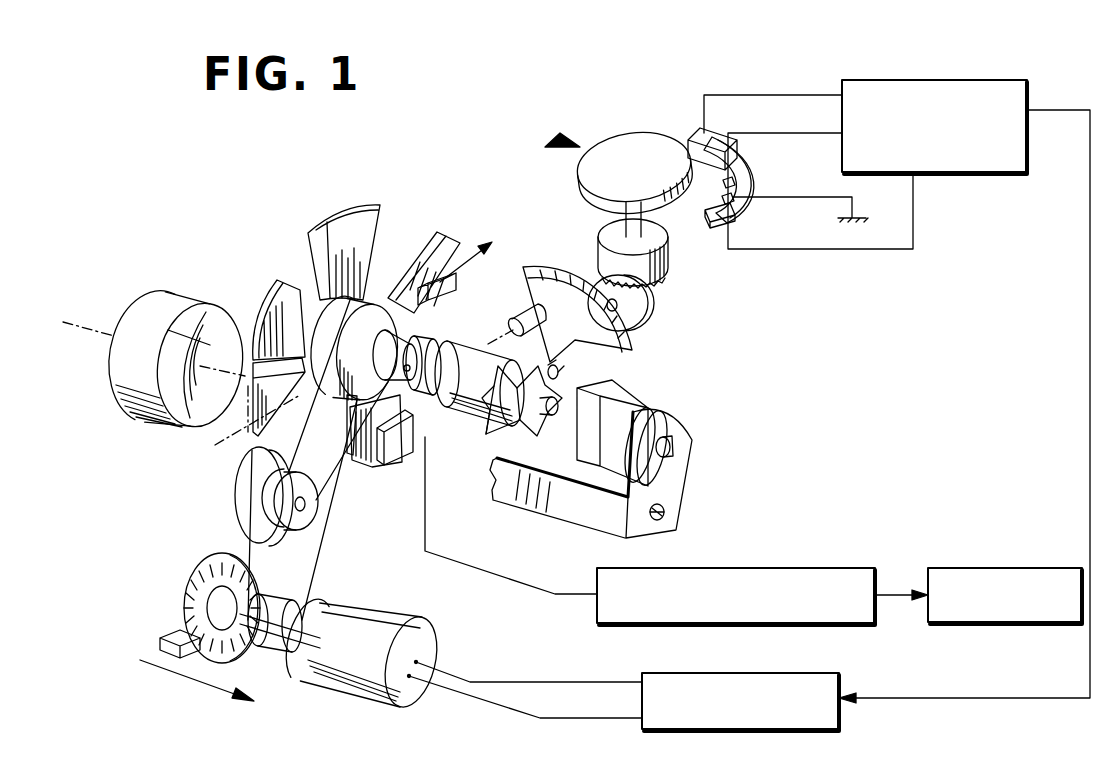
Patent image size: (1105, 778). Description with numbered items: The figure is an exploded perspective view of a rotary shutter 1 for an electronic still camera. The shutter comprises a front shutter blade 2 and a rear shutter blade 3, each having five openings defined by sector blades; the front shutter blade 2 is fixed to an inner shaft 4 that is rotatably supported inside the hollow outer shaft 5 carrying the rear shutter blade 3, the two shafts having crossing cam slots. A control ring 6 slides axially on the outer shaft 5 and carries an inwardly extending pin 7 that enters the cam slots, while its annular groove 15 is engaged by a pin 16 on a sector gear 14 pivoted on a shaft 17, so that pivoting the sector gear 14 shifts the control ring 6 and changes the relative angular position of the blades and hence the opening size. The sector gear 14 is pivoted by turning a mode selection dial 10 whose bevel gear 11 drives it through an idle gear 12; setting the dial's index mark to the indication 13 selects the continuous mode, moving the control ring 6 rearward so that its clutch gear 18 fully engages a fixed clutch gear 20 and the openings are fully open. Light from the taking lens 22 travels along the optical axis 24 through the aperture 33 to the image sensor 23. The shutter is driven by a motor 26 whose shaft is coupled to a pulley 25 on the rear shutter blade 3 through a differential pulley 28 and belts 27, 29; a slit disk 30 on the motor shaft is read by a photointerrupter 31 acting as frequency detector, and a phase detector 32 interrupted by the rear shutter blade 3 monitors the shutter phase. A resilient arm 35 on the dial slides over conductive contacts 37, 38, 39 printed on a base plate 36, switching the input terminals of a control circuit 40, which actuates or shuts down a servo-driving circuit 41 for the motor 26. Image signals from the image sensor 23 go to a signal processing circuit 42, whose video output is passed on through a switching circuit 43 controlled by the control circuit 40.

The rotary shutter 1 is at (392, 188).
The front shutter blade 2 is at (308, 232).
The rear shutter blade 3 is at (277, 281).
The inner shaft 4 is at (548, 414).
The outer shaft 5 is at (402, 352).
The control ring 6 is at (420, 410).
The pin 7 is at (448, 380).
The mode selection dial 10 is at (638, 132).
The bevel gear 11 is at (668, 268).
The idle gear 12 is at (652, 306).
The indication 13 is at (555, 131).
The sector gear 14 is at (556, 268).
The annular groove 15 is at (436, 358).
The pin 16 is at (515, 308).
The shaft 17 is at (554, 364).
The clutch gear 18 is at (488, 436).
The clutch gear 20 is at (608, 393).
The taking lens 22 is at (112, 378).
The image sensor 23 is at (398, 458).
The optical axis 24 is at (80, 325).
The pulley 25 is at (340, 333).
The motor 26 is at (384, 627).
The belt 27 is at (314, 553).
The differential pulley 28 is at (245, 496).
The belt 29 is at (335, 472).
The slit disk 30 is at (200, 570).
The photointerrupter 31 is at (172, 630).
The phase detector 32 is at (430, 272).
The aperture 33 is at (226, 437).
The resilient arm 35 is at (700, 178).
The base plate 36 is at (718, 229).
The conductive contact 37 is at (733, 167).
The conductive contact 38 is at (743, 208).
The conductive contact 39 is at (747, 187).
The control circuit 40 is at (935, 80).
The servo-driving circuit 41 is at (840, 673).
The signal processing circuit 42 is at (748, 567).
The switching circuit 43 is at (1012, 567).